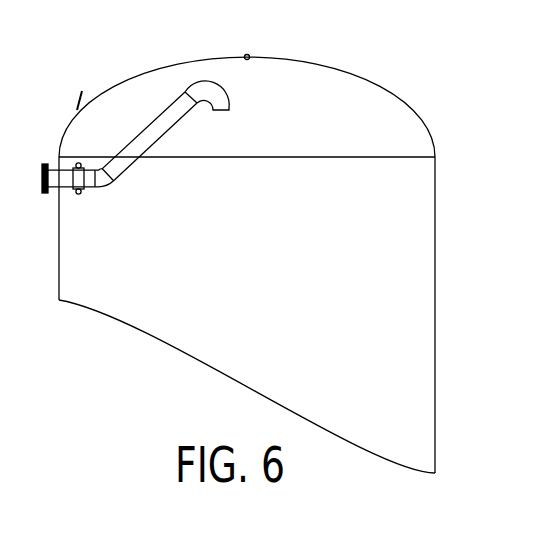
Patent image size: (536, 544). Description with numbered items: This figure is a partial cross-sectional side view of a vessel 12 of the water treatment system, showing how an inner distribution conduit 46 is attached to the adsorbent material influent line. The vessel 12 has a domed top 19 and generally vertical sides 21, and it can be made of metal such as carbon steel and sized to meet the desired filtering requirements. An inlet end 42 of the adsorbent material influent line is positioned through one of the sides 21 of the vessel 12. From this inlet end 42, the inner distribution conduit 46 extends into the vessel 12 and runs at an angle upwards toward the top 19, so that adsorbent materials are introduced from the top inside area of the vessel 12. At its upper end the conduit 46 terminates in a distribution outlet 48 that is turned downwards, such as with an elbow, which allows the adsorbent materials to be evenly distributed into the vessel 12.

The first vessel 12 is at (279, 236).
The top 19 is at (307, 61).
The sides 21 is at (436, 263).
The inlet end 42 is at (54, 170).
The inner distribution conduit 46 is at (160, 146).
The distribution outlet 48 is at (230, 109).